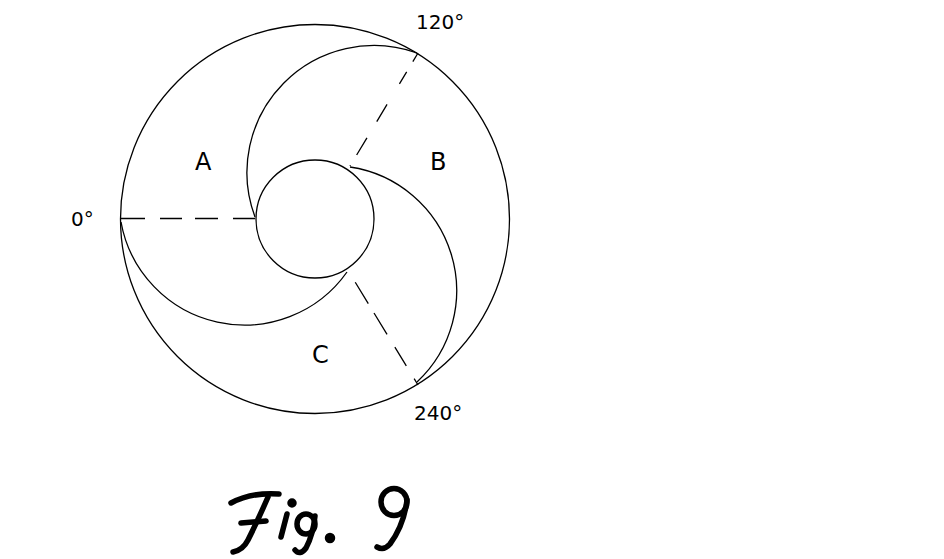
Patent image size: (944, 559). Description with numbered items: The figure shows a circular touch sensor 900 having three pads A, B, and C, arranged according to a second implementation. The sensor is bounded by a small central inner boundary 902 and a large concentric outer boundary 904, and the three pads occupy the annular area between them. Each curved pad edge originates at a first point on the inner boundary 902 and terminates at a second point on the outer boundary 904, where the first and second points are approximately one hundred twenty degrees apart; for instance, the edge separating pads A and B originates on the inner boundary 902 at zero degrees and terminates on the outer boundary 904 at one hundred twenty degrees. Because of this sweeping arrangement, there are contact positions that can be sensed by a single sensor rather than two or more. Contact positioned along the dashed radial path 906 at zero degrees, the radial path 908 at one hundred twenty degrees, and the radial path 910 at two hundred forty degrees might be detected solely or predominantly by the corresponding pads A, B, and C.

The circular touch sensor 900 is at (553, 61).
The inner boundary 902 is at (273, 261).
The outer boundary 904 is at (197, 373).
The radial path 906 is at (182, 218).
The radial path 908 is at (402, 83).
The radial path 910 is at (396, 352).